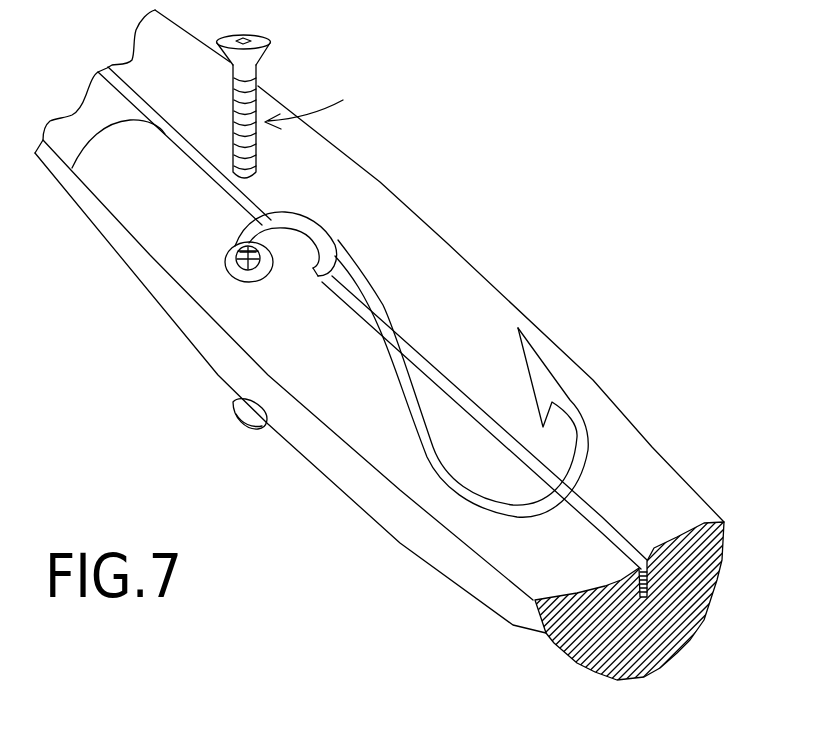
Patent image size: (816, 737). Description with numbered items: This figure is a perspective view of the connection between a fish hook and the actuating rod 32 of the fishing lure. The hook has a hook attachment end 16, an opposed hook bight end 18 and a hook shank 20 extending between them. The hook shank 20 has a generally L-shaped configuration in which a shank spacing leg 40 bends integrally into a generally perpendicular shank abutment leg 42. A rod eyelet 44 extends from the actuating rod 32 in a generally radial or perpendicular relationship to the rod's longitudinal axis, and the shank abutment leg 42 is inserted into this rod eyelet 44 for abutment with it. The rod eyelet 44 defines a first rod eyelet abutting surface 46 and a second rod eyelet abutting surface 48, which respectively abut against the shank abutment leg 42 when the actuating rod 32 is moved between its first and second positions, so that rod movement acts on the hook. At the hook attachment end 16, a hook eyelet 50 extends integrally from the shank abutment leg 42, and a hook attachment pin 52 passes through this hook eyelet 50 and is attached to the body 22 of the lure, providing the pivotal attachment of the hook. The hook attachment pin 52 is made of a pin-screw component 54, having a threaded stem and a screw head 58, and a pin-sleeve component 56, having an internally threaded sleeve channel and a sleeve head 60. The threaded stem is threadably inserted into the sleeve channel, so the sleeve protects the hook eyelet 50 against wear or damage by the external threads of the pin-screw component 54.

The hook attachment end 16 is at (267, 293).
The hook bight end 18 is at (593, 405).
The hook shank 20 is at (394, 272).
The body 22 is at (485, 260).
The actuating rod 32 is at (72, 170).
The shank spacing leg 40 is at (428, 428).
The shank abutment leg 42 is at (278, 246).
The rod eyelet 44 is at (314, 235).
The first rod eyelet abutting surface 46 is at (298, 256).
The second rod eyelet abutting surface 48 is at (280, 234).
The hook eyelet 50 is at (253, 243).
The hook attachment pin 52 is at (318, 108).
The pin-screw component 54 is at (288, 89).
The pin-sleeve component 56 is at (230, 270).
The screw head 58 is at (265, 33).
The sleeve head 60 is at (247, 430).